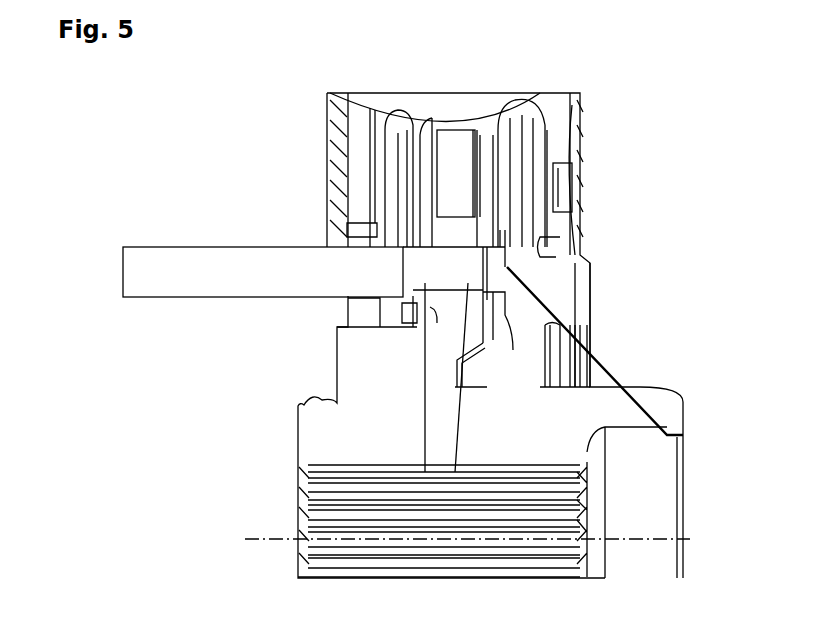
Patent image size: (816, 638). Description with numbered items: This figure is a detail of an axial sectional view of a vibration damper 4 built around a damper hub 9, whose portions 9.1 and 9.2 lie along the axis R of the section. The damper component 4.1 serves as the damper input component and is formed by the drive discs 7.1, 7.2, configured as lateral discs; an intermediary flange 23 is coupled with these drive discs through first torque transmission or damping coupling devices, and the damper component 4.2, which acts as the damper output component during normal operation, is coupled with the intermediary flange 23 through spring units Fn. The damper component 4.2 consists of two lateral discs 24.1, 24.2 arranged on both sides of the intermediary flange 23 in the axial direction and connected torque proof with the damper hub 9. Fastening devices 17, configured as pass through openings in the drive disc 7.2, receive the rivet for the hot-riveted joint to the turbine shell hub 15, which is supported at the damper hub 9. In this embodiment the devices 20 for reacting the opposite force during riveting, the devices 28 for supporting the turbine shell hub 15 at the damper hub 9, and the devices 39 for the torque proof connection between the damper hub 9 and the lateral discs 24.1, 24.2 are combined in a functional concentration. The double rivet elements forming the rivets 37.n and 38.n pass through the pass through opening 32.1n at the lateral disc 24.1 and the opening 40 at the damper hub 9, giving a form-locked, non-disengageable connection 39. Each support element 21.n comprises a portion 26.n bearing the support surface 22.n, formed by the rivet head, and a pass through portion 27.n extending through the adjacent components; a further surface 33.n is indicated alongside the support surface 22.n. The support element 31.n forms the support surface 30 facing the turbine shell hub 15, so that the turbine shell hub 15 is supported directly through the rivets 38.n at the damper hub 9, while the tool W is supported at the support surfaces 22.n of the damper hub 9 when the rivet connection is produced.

The vibration damper 4 is at (614, 76).
The damper component 4.1 is at (369, 129).
The damper component 4.2 is at (511, 114).
The drive disc 7.1 is at (387, 105).
The drive disc 7.2 is at (555, 110).
The lateral disc 24.1 is at (418, 118).
The lateral disc 24.2 is at (482, 160).
The intermediary flange 23 is at (447, 220).
The spring units Fn is at (473, 105).
The torque proof connection devices 39 is at (483, 210).
The fastening devices 17 is at (560, 188).
The supporting devices 28 is at (510, 246).
The turbine shell hub 15 is at (578, 277).
The support surface 30 is at (613, 362).
The workpiece W is at (159, 245).
The pass through opening 32.1n is at (413, 237).
The opposite force reacting devices 20 is at (403, 243).
The contact surface 33.n is at (398, 222).
The support surface 22.n is at (387, 247).
The support element 21.n is at (400, 283).
The rivet 37.n is at (274, 353).
The portion bearing the support surface 26.n is at (405, 283).
The support element 31.n is at (498, 358).
The rivet 38.n is at (520, 440).
The damper hub 9 is at (347, 450).
The axis of rotation R is at (290, 541).
The pass through portion 27.n is at (421, 283).
The first thread flank 9.1 is at (440, 360).
The pass through opening 40 is at (441, 300).
The second thread flank 9.2 is at (483, 300).